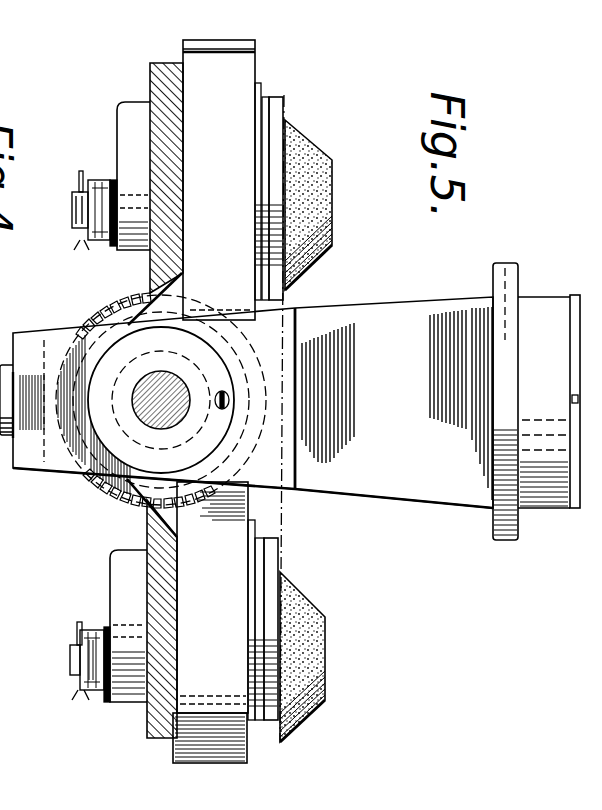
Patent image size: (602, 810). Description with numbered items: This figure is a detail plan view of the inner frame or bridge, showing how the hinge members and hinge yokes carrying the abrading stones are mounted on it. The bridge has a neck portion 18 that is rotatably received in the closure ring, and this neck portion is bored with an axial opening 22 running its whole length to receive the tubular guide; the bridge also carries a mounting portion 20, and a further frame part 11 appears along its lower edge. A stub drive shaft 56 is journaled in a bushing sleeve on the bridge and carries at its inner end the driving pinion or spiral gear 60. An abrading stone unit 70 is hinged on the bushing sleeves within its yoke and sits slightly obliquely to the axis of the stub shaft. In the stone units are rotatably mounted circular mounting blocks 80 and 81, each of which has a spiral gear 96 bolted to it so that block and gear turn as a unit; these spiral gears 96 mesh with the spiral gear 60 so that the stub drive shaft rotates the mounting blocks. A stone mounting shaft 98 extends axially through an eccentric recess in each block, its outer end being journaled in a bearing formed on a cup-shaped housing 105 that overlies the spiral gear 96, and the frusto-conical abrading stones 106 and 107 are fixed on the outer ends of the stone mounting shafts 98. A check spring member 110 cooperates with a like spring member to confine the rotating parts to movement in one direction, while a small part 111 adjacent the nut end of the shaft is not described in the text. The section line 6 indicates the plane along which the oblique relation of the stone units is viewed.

The section line 6- 6 is at (284, 80).
The frame body 11 is at (397, 502).
The neck portion 18 is at (535, 510).
The mounting portion 20 is at (338, 487).
The axial opening 22 is at (576, 510).
The stub drive shaft 56 is at (143, 405).
The driving pinion 60 is at (198, 66).
The abrading stone unit 70 is at (190, 748).
The circular mounting block 80 is at (285, 105).
The circular mounting block 81 is at (278, 565).
The spiral gear 96 is at (150, 79).
The stone mounting shaft 98 is at (70, 205).
The cup-shaped housing 105 is at (128, 592).
The abrading stone 106 is at (328, 200).
The abrading stone 107 is at (320, 637).
The check spring member 110 is at (70, 648).
The lock nut 111 is at (100, 685).